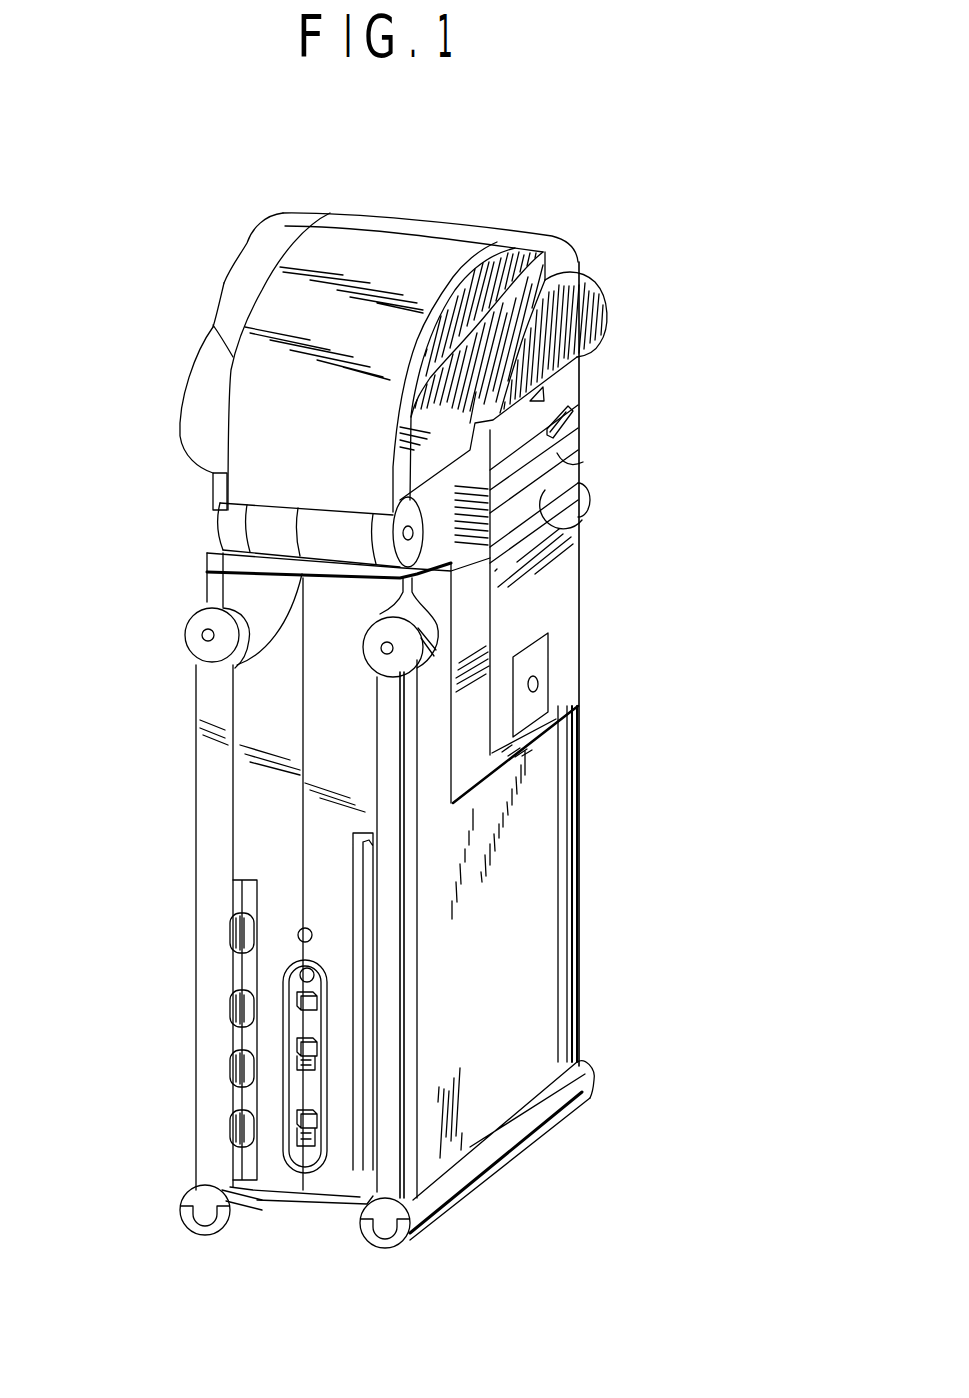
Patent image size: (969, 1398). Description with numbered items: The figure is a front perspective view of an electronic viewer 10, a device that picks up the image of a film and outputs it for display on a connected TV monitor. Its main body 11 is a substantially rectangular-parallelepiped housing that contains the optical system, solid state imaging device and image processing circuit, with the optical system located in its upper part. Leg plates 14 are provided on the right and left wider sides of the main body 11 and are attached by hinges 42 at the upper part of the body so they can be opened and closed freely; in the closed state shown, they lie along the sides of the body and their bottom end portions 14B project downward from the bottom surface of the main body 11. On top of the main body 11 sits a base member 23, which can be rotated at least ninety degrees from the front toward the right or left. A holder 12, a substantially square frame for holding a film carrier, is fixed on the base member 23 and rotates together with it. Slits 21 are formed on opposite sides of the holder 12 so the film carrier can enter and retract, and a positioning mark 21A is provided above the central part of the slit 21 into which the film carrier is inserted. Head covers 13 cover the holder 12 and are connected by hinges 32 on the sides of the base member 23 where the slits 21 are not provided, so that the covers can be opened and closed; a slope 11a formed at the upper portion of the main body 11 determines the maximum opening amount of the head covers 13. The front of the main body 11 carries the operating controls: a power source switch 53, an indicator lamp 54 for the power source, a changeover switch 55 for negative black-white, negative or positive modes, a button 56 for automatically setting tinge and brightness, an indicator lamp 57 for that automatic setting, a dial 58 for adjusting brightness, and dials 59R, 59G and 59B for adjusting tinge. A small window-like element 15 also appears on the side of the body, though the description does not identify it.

The electronic viewer 10 is at (688, 268).
The main body 11 is at (267, 583).
The slope 11a is at (235, 667).
The holder 12 is at (557, 458).
The head cover 13 is at (393, 232).
The leg plate 14 is at (210, 763).
The bottom end portion 14B is at (182, 1221).
The window 15 is at (538, 687).
The slit 21 is at (572, 410).
The positioning mark 21A is at (533, 393).
The base member 23 is at (545, 508).
The hinge 32 is at (267, 520).
The hinge 42 is at (204, 633).
The power source switch 53 is at (298, 1150).
The indicator lamp for power source 54 is at (313, 937).
The changeover switch 55 is at (317, 1058).
The button for automatically setting tinge/brightness 56 is at (318, 1002).
The indicator lamp for automatic setting of tinge/brightness 57 is at (318, 975).
The dial for adjusting brightness 58 is at (240, 913).
The dial for adjusting tinge 59R is at (240, 995).
The dial for adjusting tinge 59G is at (240, 1060).
The dial for adjusting tinge 59B is at (240, 1123).